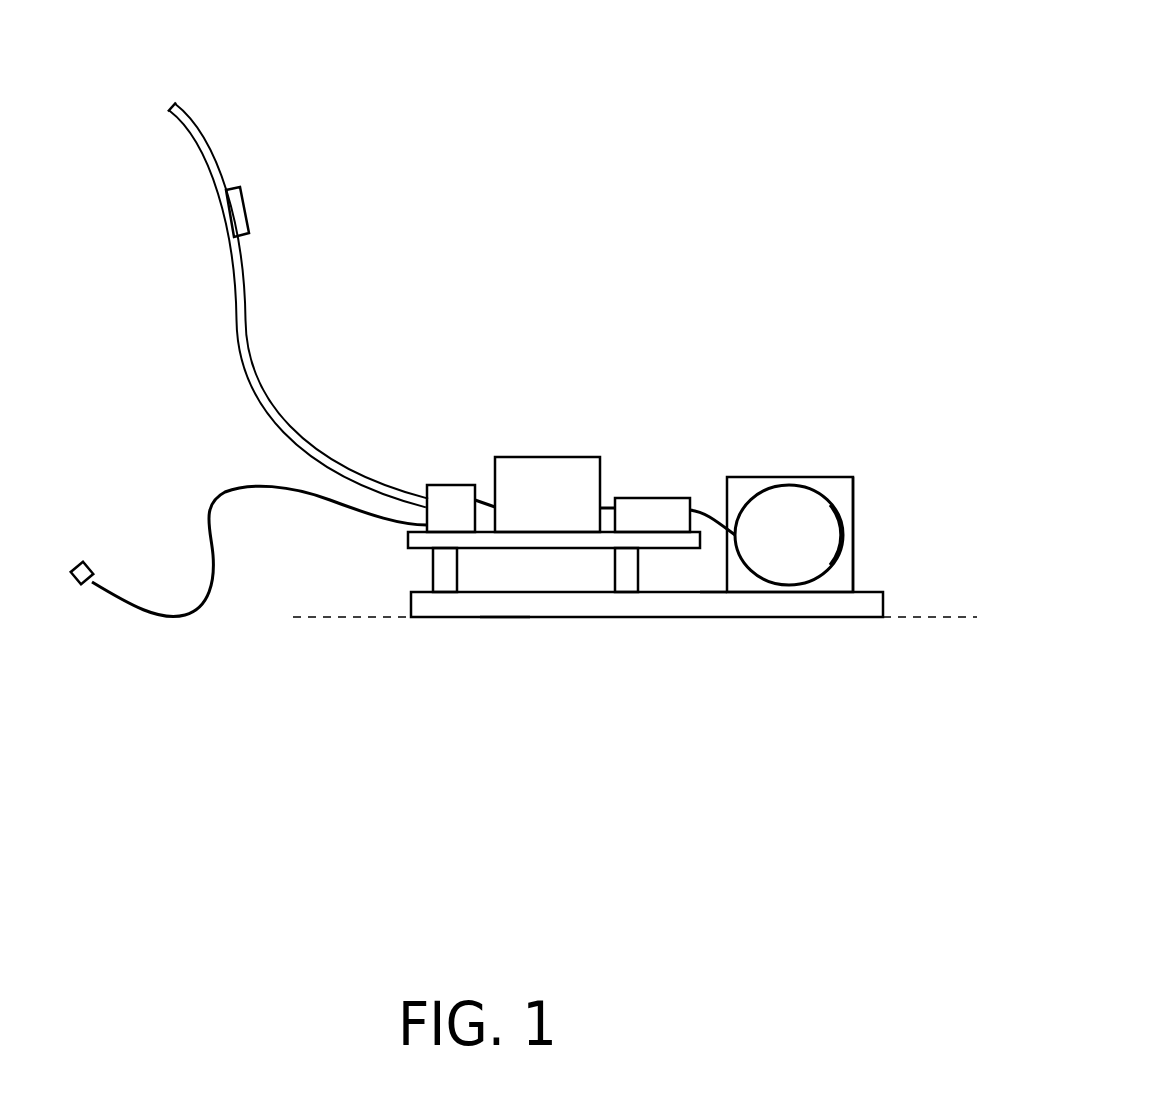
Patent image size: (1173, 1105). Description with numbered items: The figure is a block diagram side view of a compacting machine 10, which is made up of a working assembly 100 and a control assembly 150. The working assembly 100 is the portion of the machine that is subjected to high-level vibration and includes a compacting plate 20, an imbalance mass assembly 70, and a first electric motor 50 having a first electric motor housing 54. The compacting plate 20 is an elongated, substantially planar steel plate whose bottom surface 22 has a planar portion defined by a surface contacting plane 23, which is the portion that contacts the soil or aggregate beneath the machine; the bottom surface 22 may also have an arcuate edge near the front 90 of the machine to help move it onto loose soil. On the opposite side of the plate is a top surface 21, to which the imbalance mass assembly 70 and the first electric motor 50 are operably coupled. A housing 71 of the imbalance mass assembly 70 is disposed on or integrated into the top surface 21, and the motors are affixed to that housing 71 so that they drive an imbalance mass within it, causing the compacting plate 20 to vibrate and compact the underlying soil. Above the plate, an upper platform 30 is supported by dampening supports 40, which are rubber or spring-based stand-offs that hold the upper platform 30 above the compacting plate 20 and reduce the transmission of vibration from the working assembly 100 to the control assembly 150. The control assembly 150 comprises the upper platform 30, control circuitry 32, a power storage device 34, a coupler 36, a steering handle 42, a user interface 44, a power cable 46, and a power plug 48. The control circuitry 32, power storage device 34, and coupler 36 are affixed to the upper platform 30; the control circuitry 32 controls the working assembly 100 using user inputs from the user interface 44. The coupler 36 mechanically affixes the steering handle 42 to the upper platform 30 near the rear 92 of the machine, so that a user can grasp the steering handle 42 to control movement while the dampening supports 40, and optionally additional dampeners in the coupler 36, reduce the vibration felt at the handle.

The compacting machine 10 is at (697, 78).
The compacting plate 20 is at (650, 608).
The top surface 21 is at (705, 590).
The bottom surface 22 is at (503, 620).
The surface contacting plane 23 is at (930, 618).
The upper platform 30 is at (418, 542).
The control circuitry 32 is at (638, 512).
The power storage device 34 is at (527, 477).
The coupler 36 is at (443, 498).
The dampening supports 40 is at (445, 582).
The steering handle 42 is at (258, 362).
The user interface 44 is at (243, 207).
The power cable 46 is at (210, 545).
The power plug 48 is at (88, 562).
The first electric motor 50 is at (807, 527).
The first electric motor housing 54 is at (843, 537).
The imbalance mass assembly 70 is at (820, 485).
The housing 71 is at (853, 478).
The front 90 is at (912, 586).
The rear 92 is at (410, 443).
The working assembly 100 is at (827, 407).
The control assembly 150 is at (482, 347).